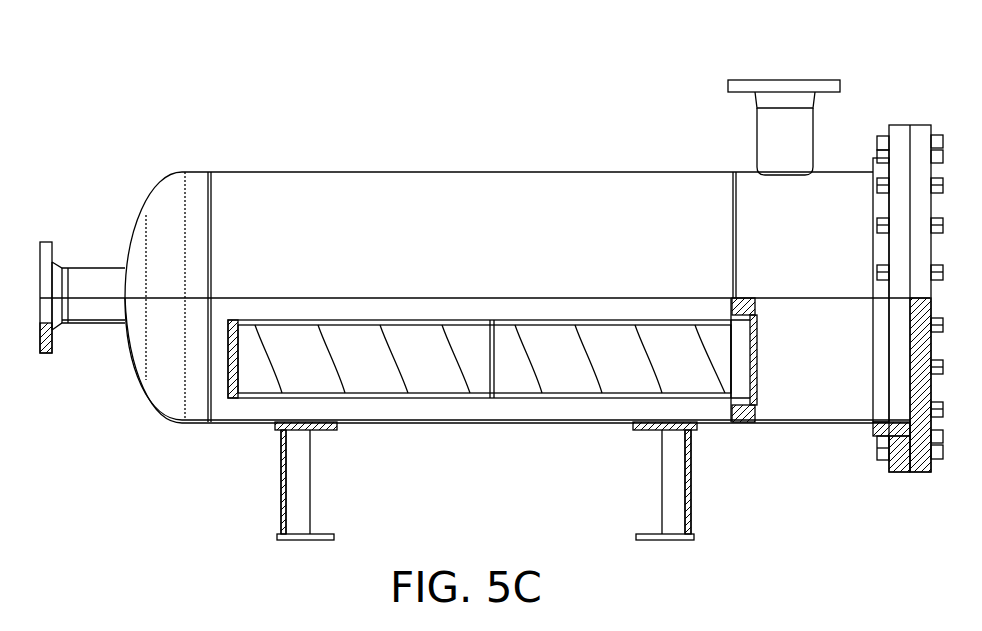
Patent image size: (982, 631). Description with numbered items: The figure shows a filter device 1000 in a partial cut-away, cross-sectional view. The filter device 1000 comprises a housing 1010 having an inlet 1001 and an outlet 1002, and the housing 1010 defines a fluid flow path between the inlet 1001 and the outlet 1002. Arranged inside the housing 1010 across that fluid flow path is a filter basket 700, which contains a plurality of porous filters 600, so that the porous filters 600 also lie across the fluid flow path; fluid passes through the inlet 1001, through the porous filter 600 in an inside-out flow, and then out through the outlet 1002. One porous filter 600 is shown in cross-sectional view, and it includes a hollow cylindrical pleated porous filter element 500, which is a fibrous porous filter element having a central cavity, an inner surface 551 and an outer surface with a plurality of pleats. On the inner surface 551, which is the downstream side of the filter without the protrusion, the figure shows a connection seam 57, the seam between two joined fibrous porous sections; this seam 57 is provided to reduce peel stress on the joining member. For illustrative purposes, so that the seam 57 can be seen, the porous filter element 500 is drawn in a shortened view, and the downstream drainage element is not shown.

The filter device 1000 is at (203, 493).
The housing 1010 is at (395, 171).
The inlet 1001 is at (790, 80).
The outlet 1002 is at (37, 312).
The porous filter 600 is at (560, 404).
The hollow cylindrical pleated porous filter element 500 is at (445, 379).
The inner surface 551 is at (515, 356).
The connection seam 57 is at (505, 396).
The filter basket 700 is at (755, 303).